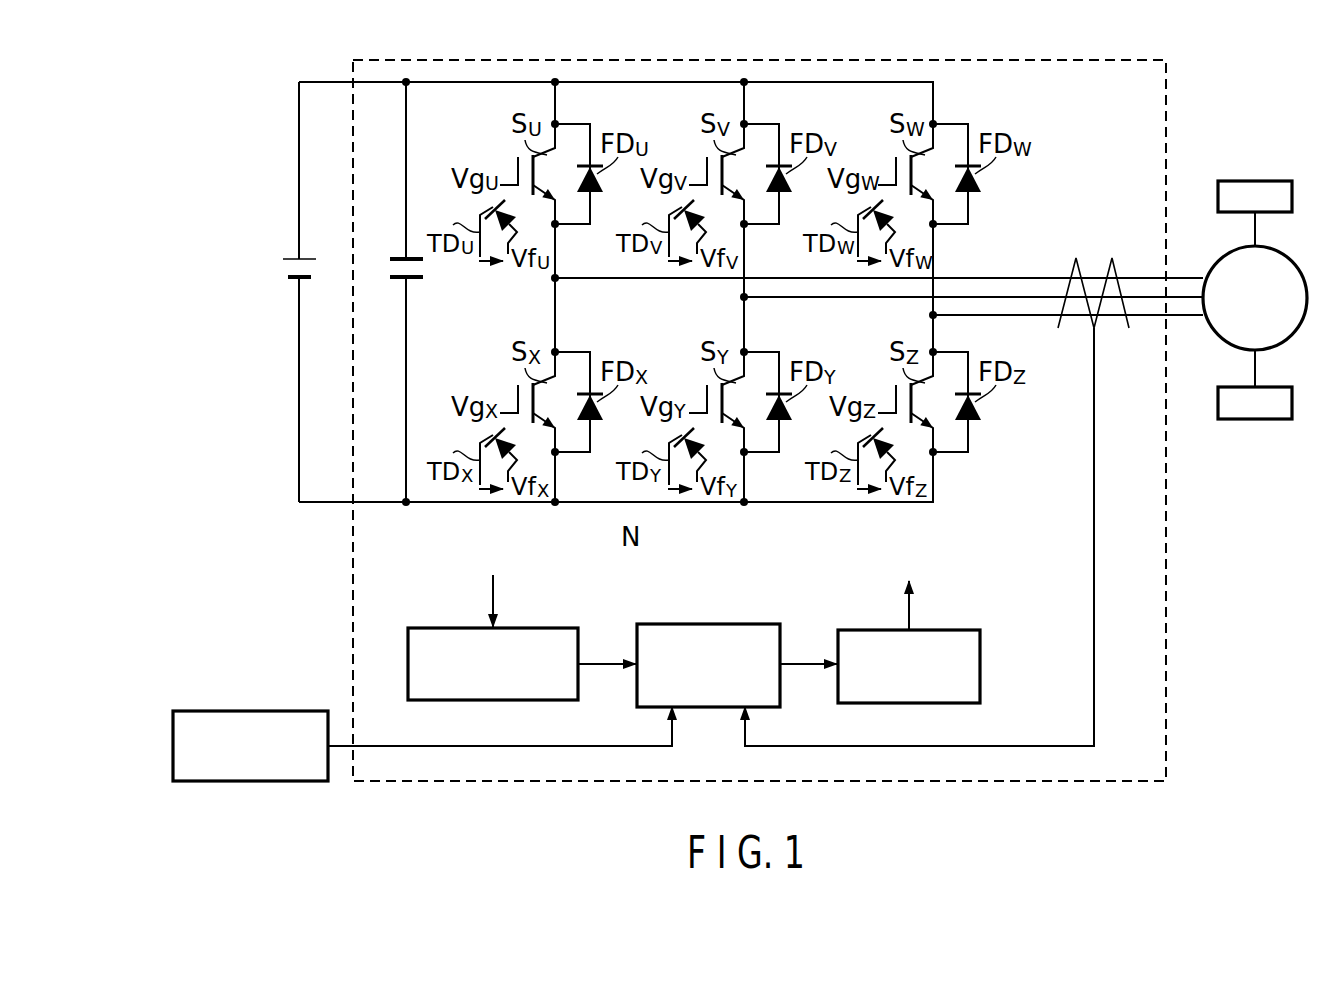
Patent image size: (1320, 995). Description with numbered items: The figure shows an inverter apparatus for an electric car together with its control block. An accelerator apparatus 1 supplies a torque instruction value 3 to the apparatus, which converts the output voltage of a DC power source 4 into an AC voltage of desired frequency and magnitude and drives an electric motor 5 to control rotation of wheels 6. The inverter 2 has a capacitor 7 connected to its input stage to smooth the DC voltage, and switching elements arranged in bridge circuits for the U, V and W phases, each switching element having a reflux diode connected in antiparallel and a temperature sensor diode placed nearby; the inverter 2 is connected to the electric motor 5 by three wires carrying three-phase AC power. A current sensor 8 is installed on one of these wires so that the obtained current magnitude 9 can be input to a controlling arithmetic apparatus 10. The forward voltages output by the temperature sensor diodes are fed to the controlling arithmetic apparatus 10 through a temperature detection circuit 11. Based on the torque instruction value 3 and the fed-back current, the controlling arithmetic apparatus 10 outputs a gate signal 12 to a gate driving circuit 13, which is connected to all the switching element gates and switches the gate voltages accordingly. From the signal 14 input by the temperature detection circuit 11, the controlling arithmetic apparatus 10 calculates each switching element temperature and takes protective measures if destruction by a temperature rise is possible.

The accelerator apparatus 1 is at (200, 711).
The inverter 2 is at (1168, 738).
The torque instruction value 3 is at (397, 745).
The DC power source 4 is at (303, 281).
The electric motor 5 is at (1206, 274).
The wheels 6 is at (1272, 421).
The capacitor 7 is at (416, 281).
The current sensor 8 is at (1073, 276).
The current magnitude 9 is at (1096, 637).
The controlling arithmetic apparatus 10 is at (712, 623).
The temperature detection circuit 11 is at (448, 627).
The gate signal 12 is at (809, 662).
The gate driving circuit 13 is at (865, 629).
The signal 14 is at (606, 662).